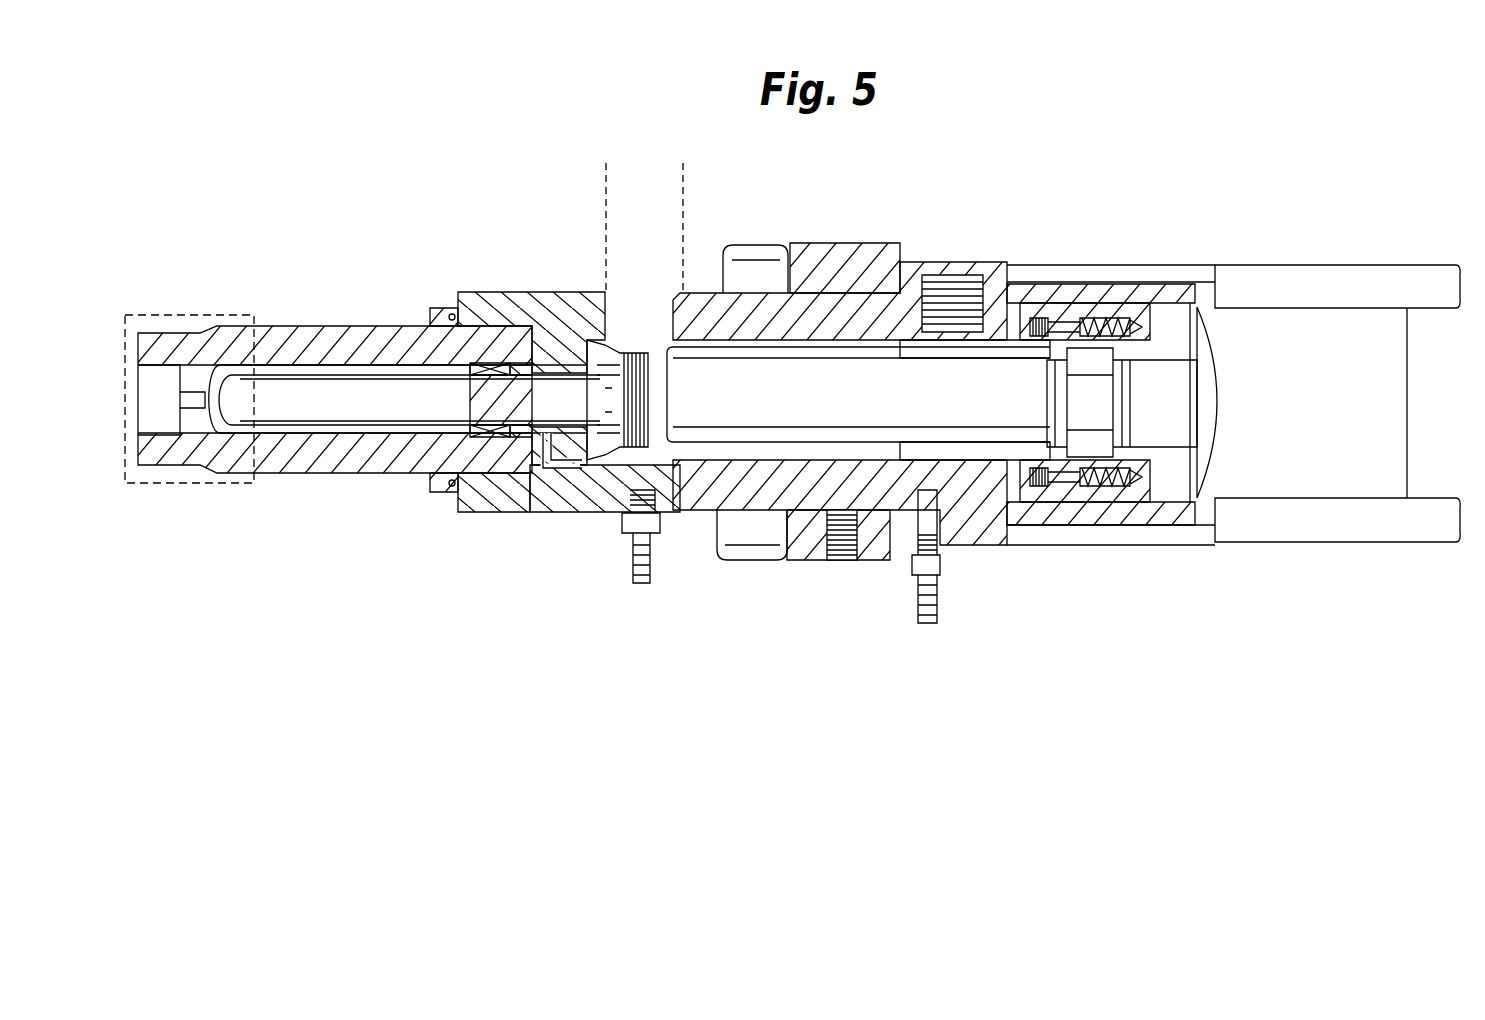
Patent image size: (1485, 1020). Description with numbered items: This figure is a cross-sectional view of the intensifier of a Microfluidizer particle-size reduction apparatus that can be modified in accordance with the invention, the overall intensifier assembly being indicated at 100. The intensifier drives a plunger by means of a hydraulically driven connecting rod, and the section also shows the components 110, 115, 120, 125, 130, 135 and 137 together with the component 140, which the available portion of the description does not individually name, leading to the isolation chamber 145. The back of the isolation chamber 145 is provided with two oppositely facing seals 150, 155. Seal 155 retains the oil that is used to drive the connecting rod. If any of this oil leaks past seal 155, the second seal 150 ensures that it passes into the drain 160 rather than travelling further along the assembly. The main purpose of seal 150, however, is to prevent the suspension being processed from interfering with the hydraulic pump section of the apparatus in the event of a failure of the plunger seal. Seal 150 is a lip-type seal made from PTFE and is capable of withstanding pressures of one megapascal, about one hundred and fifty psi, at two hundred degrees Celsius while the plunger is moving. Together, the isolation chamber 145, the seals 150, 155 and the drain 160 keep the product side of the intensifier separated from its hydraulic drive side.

The press assembly 100 is at (1215, 225).
The body 110 is at (305, 345).
The inner rod 115 is at (330, 410).
The flange seal 120 is at (488, 367).
The nut 125 is at (548, 337).
The lower plate 130 is at (522, 430).
The threaded ring 135 is at (640, 340).
The gap 137 is at (625, 188).
The housing 140 is at (700, 440).
The isolation chamber 145 is at (872, 360).
The seal 150 is at (915, 445).
The seal 155 is at (1000, 460).
The drain 160 is at (925, 630).